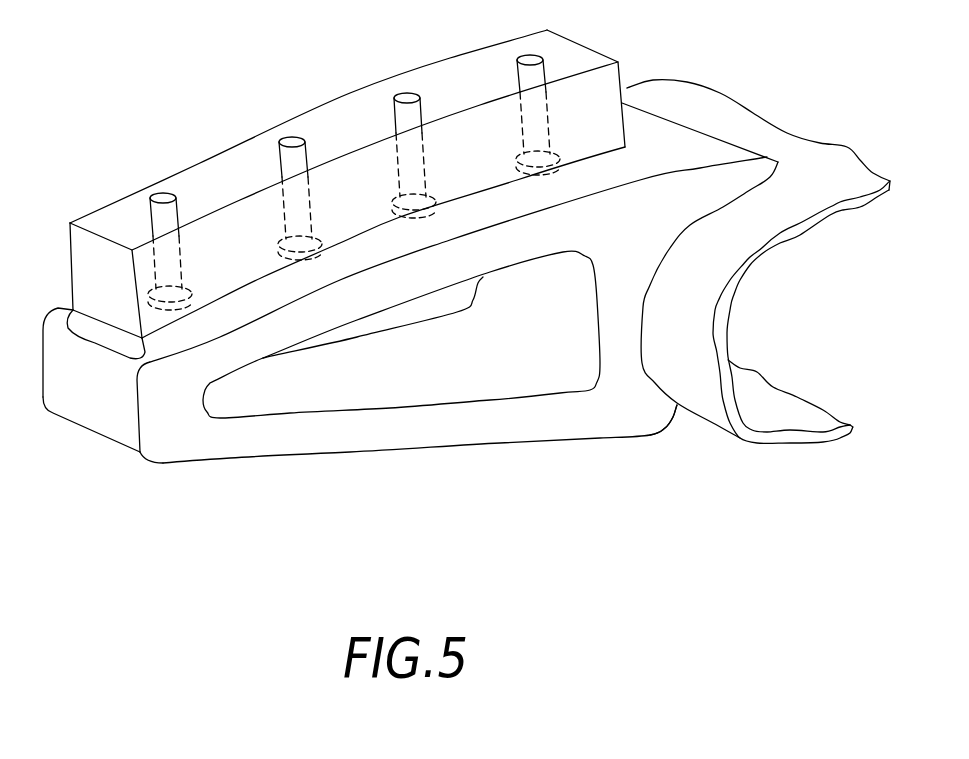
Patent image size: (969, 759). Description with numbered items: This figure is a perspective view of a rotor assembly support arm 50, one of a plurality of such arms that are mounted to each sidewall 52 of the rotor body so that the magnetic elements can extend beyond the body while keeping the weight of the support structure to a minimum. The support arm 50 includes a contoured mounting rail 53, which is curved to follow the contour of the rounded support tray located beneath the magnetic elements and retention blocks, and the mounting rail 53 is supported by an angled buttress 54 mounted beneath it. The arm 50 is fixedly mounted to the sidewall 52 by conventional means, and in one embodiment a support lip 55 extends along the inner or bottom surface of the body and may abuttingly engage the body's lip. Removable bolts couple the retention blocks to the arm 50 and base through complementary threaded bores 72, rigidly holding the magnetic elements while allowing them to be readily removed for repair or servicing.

The support arm 50 is at (138, 482).
The sidewall 52 is at (732, 128).
The contoured mounting rail 53 is at (118, 223).
The angled buttress 54 is at (508, 435).
The support lip 55 is at (675, 422).
The threaded bore 72 is at (187, 228).